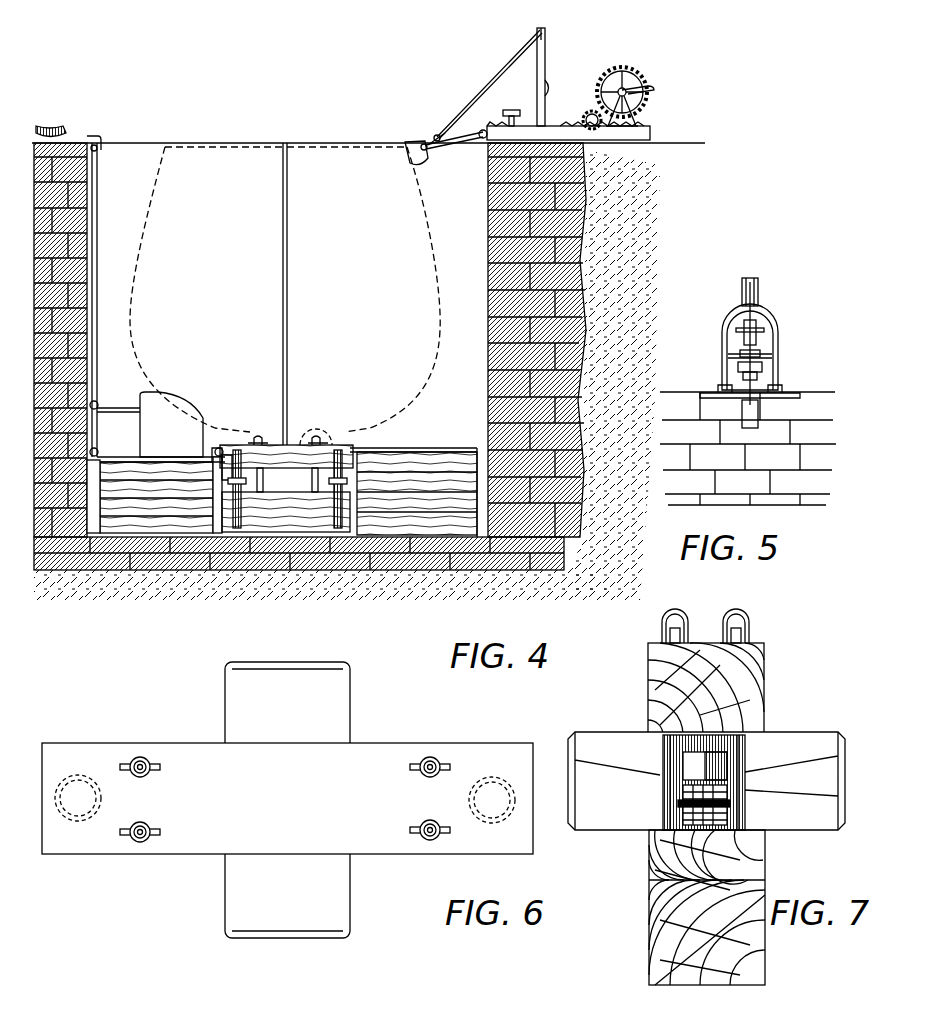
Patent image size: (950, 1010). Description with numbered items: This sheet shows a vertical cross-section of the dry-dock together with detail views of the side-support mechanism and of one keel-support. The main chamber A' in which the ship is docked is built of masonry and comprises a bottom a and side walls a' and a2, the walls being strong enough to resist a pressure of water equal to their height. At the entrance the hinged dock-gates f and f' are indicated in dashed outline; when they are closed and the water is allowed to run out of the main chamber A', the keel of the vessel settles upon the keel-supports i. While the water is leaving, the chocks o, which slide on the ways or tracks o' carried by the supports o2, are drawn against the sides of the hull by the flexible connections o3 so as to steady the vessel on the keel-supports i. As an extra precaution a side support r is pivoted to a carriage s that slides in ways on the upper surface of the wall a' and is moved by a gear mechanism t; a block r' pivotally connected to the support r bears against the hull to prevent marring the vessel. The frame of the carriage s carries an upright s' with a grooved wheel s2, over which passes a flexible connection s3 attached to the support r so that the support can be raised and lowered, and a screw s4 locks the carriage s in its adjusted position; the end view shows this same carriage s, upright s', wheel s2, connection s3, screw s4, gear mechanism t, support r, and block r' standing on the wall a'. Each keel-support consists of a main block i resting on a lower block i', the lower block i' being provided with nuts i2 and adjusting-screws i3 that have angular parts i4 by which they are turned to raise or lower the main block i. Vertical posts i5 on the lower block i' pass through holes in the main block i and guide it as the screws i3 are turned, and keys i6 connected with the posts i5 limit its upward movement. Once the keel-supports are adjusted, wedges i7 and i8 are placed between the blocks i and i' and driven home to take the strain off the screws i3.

In FIG. 4, the bottom a is at (347, 382).
In FIG. 4, the side wall a' is at (519, 340).
In FIG. 5, the side wall a' is at (748, 436).
In FIG. 4, the side wall a2 is at (98, 192).
In FIG. 4, the hinged dock-gate f is at (363, 296).
In FIG. 4, the hinged dock-gate f' is at (206, 289).
In FIG. 4, the main chamber A' is at (324, 294).
In FIG. 4, the carriage s is at (579, 124).
In FIG. 4, the upright or frame s' is at (557, 77).
In FIG. 5, the upright or frame s' is at (750, 347).
In FIG. 4, the grooved wheel s2 is at (546, 36).
In FIG. 5, the grooved wheel s2 is at (754, 282).
In FIG. 4, the flexible connection s3 is at (488, 85).
In FIG. 5, the flexible connection s3 is at (760, 338).
In FIG. 4, the screw s4 is at (512, 107).
In FIG. 5, the screw s4 is at (762, 355).
In FIG. 4, the gear mechanism t is at (650, 90).
In FIG. 5, the gear mechanism t is at (740, 352).
In FIG. 4, the side support r is at (456, 152).
In FIG. 5, the side support r is at (770, 367).
In FIG. 4, the block r' is at (416, 139).
In FIG. 5, the block r' is at (769, 414).
In FIG. 4, the chock o is at (171, 424).
In FIG. 4, the ways or tracks o' is at (287, 444).
In FIG. 4, the support o2 is at (160, 492).
In FIG. 4, the flexible connection o3 is at (98, 398).
In FIG. 4, the keel-support i is at (282, 434).
In FIG. 6, the keel-support i is at (287, 798).
In FIG. 7, the keel-support i is at (720, 689).
In FIG. 4, the lower block i' is at (286, 500).
In FIG. 7, the lower block i' is at (688, 907).
In FIG. 4, the nut i2 is at (230, 458).
In FIG. 4, the adjusting-screw i3 is at (237, 530).
In FIG. 6, the adjusting-screw i3 is at (88, 796).
In FIG. 7, the adjusting-screw i3 is at (730, 812).
In FIG. 4, the angular part i4 is at (222, 452).
In FIG. 7, the angular part i4 is at (728, 770).
In FIG. 4, the vertical post i5 is at (257, 438).
In FIG. 6, the vertical post i5 is at (142, 778).
In FIG. 7, the vertical post i5 is at (736, 618).
In FIG. 4, the key i6 is at (265, 442).
In FIG. 6, the key i6 is at (162, 770).
In FIG. 7, the key i6 is at (734, 632).
In FIG. 6, the wedge i7 is at (287, 800).
In FIG. 7, the wedge i7 is at (805, 732).
In FIG. 7, the wedge i8 is at (806, 822).